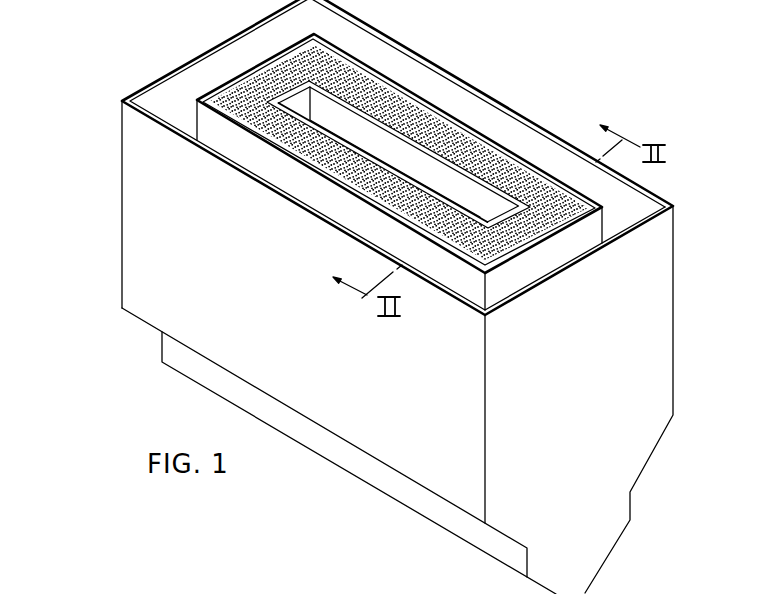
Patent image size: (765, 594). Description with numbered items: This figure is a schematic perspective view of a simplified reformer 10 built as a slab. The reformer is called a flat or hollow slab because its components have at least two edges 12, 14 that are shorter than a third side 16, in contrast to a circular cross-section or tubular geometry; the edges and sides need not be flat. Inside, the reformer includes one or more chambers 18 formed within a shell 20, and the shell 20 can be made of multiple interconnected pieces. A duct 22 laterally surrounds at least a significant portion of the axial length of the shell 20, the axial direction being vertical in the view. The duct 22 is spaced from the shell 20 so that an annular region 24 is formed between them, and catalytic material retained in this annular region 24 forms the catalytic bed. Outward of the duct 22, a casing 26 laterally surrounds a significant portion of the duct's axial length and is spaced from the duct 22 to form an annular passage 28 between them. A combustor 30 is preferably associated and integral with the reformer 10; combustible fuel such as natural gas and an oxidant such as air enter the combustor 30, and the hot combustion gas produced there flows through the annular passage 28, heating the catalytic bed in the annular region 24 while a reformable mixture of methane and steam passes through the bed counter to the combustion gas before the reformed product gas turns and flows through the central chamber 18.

The reformer 10 is at (91, 240).
The edge 12 is at (657, 298).
The edge 14 is at (232, 38).
The third side 16 is at (437, 63).
The chamber 18 is at (394, 156).
The shell 20 is at (326, 88).
The duct 22 is at (462, 120).
The annular region 24 is at (370, 86).
The casing 26 is at (397, 37).
The annular passage 28 is at (446, 98).
The combustor 30 is at (597, 550).